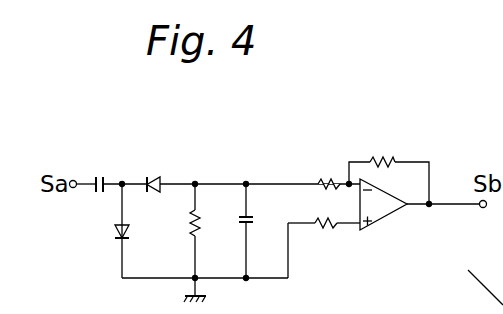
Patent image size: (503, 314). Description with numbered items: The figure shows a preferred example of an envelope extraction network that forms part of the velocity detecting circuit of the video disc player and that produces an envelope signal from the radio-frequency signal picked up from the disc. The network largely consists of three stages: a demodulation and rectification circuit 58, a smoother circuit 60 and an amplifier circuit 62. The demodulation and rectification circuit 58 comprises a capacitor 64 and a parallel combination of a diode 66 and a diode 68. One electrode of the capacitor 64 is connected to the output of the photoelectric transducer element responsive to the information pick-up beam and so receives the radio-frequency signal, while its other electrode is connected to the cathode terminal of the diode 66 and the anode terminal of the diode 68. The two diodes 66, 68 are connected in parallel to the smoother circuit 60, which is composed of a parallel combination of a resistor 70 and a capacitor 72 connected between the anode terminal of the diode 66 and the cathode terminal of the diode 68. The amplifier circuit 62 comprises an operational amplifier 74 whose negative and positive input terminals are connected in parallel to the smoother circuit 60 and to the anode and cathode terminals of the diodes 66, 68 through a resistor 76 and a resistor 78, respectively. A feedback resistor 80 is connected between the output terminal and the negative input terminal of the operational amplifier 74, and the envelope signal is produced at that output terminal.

The demodulation and rectification circuit 58 is at (131, 164).
The smoother circuit 60 is at (229, 165).
The amplifier circuit 62 is at (330, 166).
The capacitor 64 is at (101, 196).
The diode 66 is at (154, 193).
The diode 68 is at (114, 237).
The resistor 70 is at (203, 228).
The capacitor 72 is at (258, 226).
The operational amplifier 74 is at (387, 221).
The resistor 76 is at (320, 195).
The resistor 78 is at (323, 231).
The feedback resistor 80 is at (383, 161).